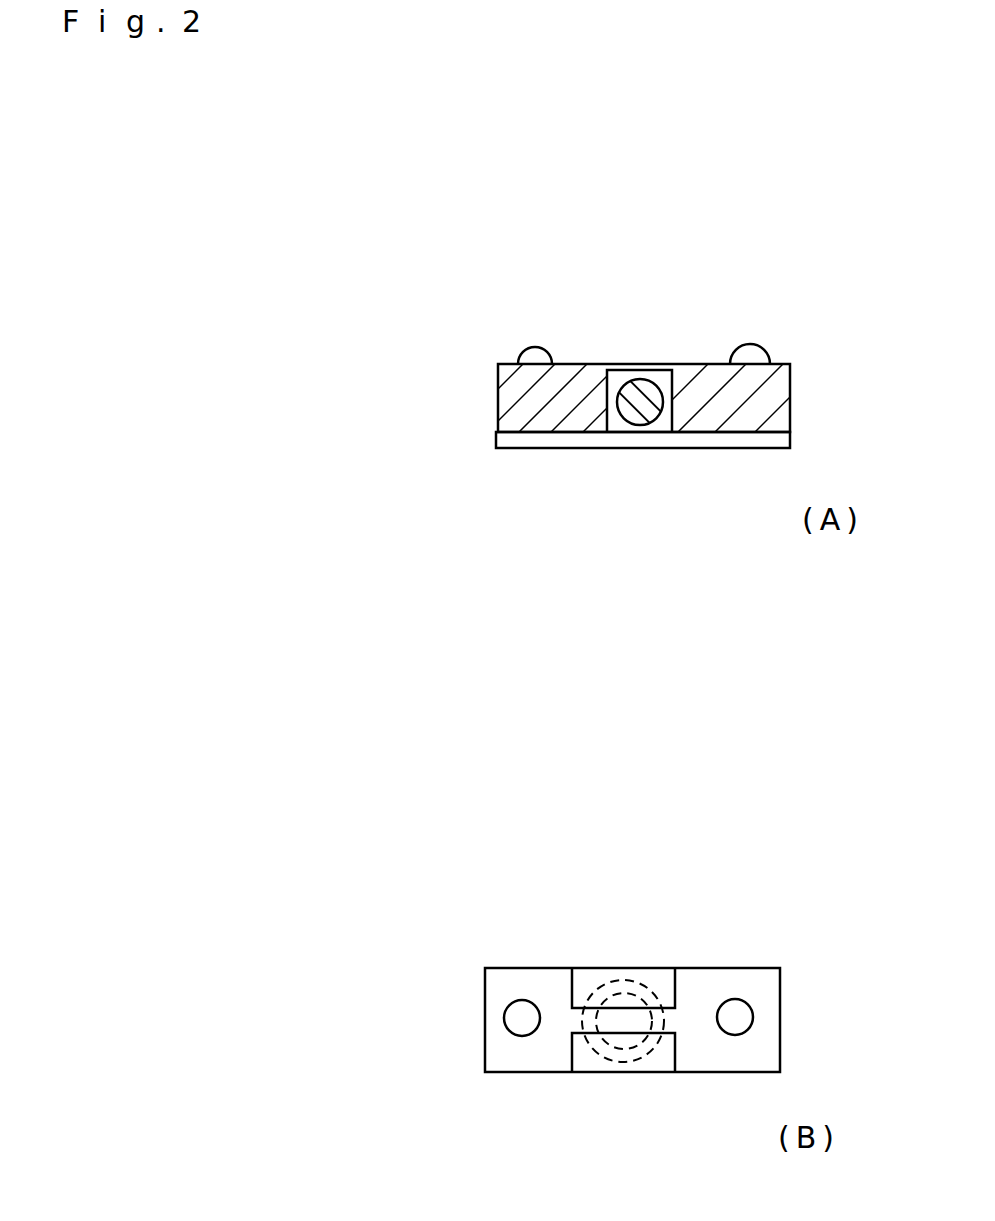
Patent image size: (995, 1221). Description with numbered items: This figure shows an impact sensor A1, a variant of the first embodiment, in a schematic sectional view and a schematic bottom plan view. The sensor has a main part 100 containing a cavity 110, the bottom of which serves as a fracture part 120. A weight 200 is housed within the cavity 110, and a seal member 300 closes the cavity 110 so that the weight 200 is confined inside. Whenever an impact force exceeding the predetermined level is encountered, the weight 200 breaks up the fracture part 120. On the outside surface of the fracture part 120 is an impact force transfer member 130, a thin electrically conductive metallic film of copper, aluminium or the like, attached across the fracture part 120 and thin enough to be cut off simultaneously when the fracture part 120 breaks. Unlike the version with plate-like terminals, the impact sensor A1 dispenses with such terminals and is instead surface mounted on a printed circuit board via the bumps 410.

The main part of sensor 100 is at (792, 415).
The cavity 110 is at (617, 426).
The fracture part 120 is at (640, 364).
The impact force transfer member 130 is at (562, 977).
The weight 200 is at (655, 427).
The seal member 300 is at (507, 446).
The bump 410 is at (532, 344).
The impact sensor A1 is at (697, 335).